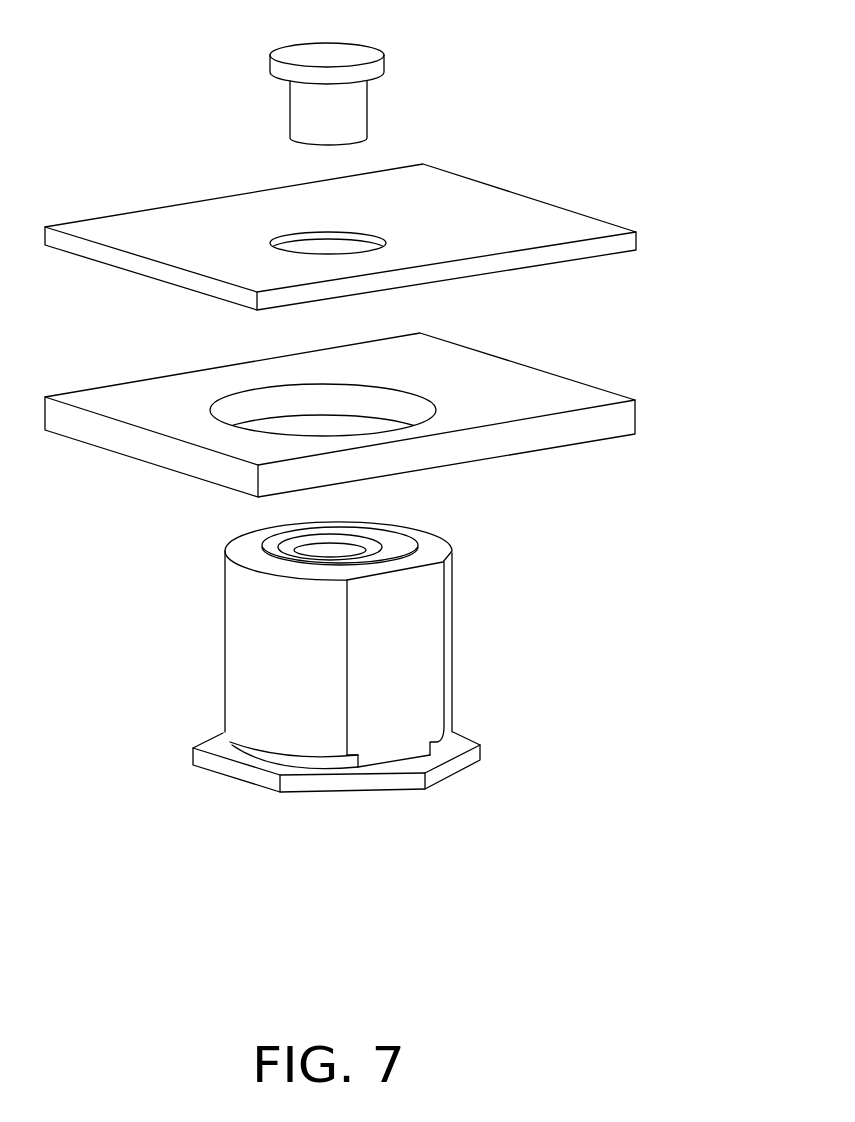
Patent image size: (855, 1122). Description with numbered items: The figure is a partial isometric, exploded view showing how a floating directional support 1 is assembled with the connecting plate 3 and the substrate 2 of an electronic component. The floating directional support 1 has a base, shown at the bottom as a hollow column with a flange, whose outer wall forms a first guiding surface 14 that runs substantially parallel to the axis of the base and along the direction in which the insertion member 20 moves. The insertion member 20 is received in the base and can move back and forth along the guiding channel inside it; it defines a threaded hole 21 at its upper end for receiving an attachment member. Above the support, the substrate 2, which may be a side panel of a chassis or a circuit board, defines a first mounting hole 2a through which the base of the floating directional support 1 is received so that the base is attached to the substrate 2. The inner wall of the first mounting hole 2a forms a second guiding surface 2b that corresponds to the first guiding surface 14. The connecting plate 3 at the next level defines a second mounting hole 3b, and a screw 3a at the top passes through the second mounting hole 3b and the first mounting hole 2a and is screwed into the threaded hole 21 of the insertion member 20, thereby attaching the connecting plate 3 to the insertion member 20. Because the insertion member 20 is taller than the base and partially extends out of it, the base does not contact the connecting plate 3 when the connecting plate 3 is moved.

The floating directional support 1 is at (352, 642).
The first guiding surface 14 is at (432, 645).
The insertion member 20 is at (275, 547).
The threaded hole 21 is at (333, 552).
The substrate 2 is at (553, 388).
The first mounting hole 2a is at (287, 400).
The second guiding surface 2b is at (350, 433).
The connecting plate 3 is at (488, 197).
The screw 3a is at (338, 52).
The second mounting hole 3b is at (325, 240).